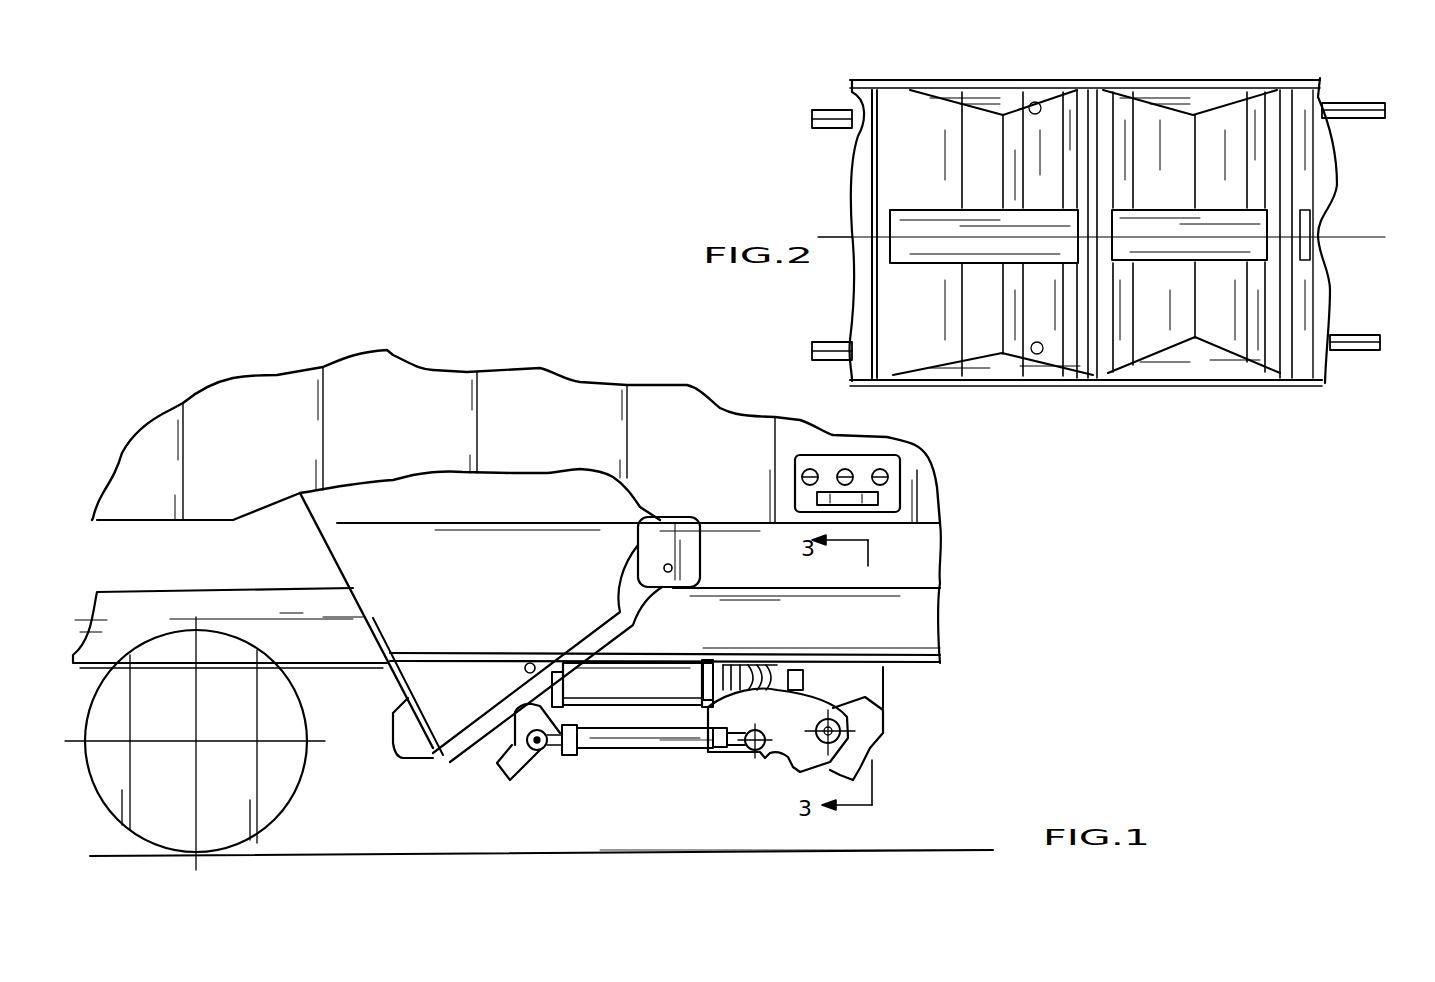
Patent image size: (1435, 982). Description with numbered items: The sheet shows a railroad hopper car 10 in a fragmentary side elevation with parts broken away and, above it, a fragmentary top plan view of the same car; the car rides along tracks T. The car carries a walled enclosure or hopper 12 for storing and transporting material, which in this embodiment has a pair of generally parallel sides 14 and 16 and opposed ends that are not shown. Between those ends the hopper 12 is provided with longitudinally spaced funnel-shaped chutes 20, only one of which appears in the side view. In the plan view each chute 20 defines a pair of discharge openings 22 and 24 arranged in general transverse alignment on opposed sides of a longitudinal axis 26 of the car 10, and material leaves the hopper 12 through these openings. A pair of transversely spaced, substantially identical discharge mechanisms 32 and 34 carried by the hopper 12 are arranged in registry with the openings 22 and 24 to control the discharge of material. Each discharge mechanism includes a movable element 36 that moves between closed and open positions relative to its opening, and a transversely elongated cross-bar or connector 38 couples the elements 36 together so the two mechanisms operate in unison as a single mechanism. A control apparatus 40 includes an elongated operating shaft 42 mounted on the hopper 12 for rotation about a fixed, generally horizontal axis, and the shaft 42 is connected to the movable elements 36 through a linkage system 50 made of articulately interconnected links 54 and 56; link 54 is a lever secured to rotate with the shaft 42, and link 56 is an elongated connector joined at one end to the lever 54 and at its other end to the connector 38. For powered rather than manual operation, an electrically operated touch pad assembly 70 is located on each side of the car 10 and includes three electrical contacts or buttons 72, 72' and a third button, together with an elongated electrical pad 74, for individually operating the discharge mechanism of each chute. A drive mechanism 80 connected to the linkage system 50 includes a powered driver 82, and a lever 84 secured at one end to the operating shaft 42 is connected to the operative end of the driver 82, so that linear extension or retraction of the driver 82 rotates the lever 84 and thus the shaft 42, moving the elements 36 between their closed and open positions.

In FIG. 2, the railroad hopper car 10 is at (795, 93).
In FIG. 1, the railroad hopper car 10 is at (315, 343).
In FIG. 2, the hopper 12 is at (1210, 415).
In FIG. 1, the hopper 12 is at (672, 368).
In FIG. 2, the side 14 is at (990, 390).
In FIG. 1, the side 14 is at (378, 377).
In FIG. 2, the side 16 is at (1237, 75).
In FIG. 2, the funnel-shaped chute 20 is at (883, 102).
In FIG. 1, the funnel-shaped chute 20 is at (513, 490).
In FIG. 2, the discharge opening 22 is at (1040, 355).
In FIG. 1, the discharge opening 22 is at (527, 668).
In FIG. 2, the discharge opening 24 is at (1032, 102).
In FIG. 2, the longitudinal axis 26 is at (1363, 232).
In FIG. 1, the discharge mechanism 32 is at (410, 773).
In FIG. 1, the discharge mechanism 34 is at (408, 686).
In FIG. 1, the movable element 36 is at (452, 760).
In FIG. 1, the cross-bar connector 38 is at (480, 757).
In FIG. 1, the control apparatus 40 is at (760, 783).
In FIG. 1, the operating shaft 42 is at (845, 710).
In FIG. 1, the linkage system 50 is at (700, 770).
In FIG. 1, the lever link 54 is at (795, 762).
In FIG. 1, the connector link 56 is at (603, 748).
In FIG. 1, the touch pad assembly 70 is at (918, 491).
In FIG. 1, the electrical contact or button 72 is at (780, 431).
In FIG. 1, the electrical contact or button 72' is at (864, 440).
In FIG. 1, the elongated electrical pad 74 is at (880, 500).
In FIG. 1, the drive mechanism 80 is at (680, 655).
In FIG. 1, the powered driver 82 is at (628, 677).
In FIG. 1, the lever 84 is at (783, 665).
In FIG. 2, the tracks T is at (843, 130).
In FIG. 1, the tracks T is at (945, 848).